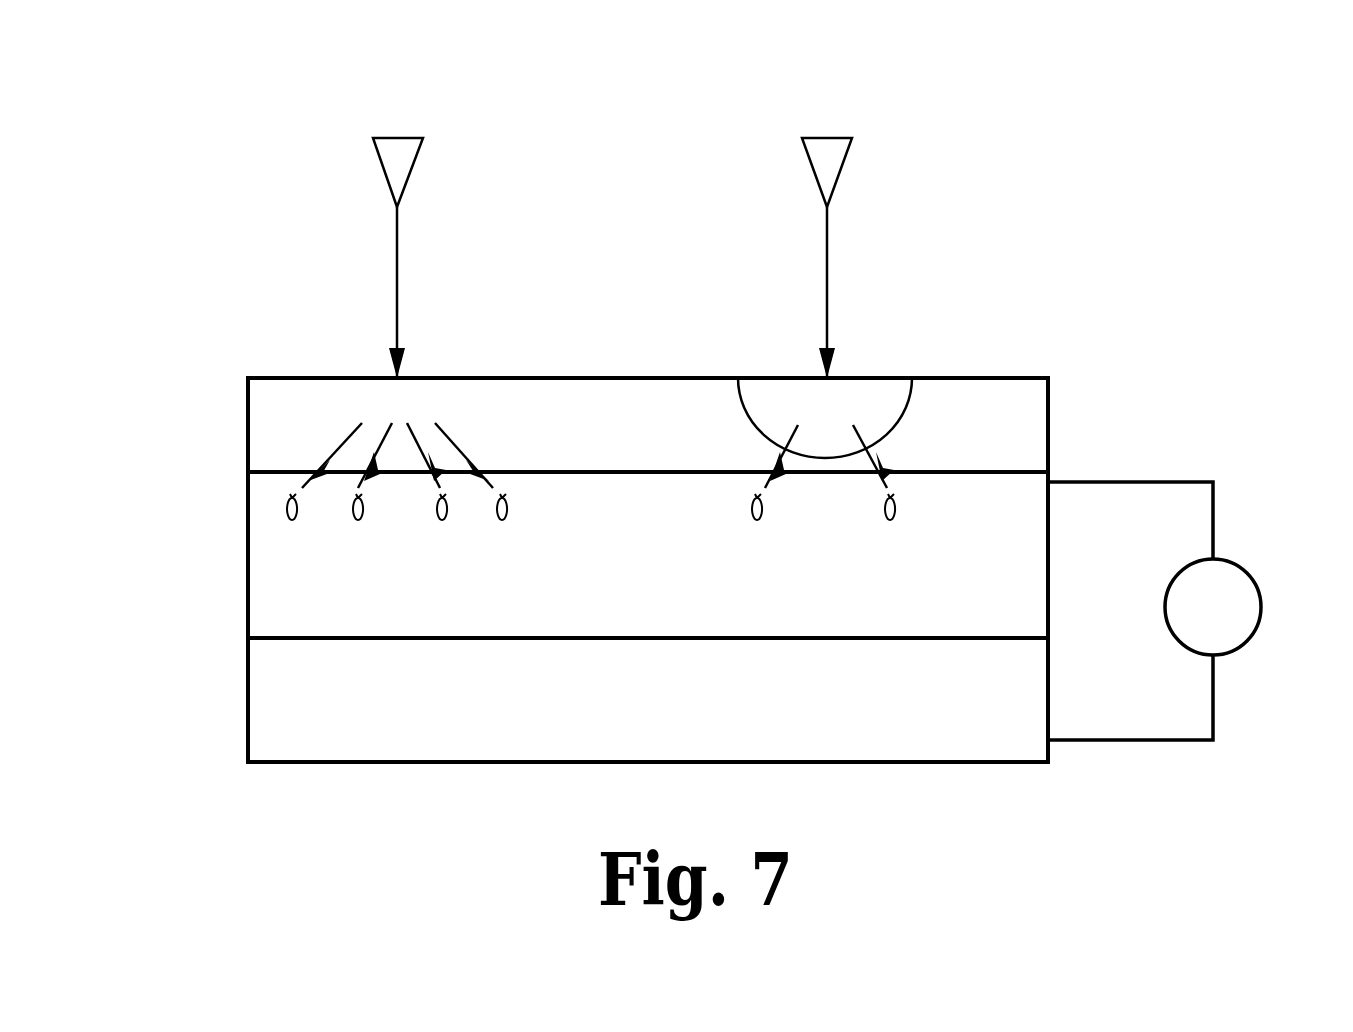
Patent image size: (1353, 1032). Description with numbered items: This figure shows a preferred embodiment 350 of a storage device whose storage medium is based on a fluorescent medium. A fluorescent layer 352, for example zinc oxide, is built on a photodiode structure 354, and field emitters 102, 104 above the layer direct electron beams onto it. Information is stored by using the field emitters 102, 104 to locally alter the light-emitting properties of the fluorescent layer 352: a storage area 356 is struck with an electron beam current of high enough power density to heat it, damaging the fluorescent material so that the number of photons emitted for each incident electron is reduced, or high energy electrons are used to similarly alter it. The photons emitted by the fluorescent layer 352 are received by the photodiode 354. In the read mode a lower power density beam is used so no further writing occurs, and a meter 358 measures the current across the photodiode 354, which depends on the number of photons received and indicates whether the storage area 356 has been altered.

The field emitter 102 is at (405, 147).
The field emitter 104 is at (830, 148).
The storage device embodiment 350 is at (1066, 165).
The fluorescent layer 352 is at (200, 441).
The photodiode structure 354 is at (208, 660).
The storage area 356 is at (888, 328).
The meter 358 is at (1243, 570).